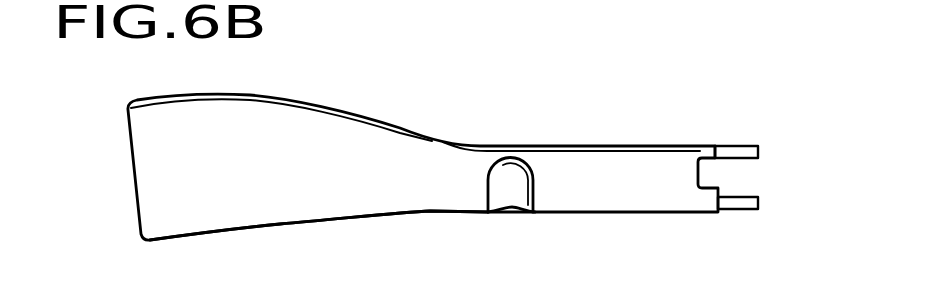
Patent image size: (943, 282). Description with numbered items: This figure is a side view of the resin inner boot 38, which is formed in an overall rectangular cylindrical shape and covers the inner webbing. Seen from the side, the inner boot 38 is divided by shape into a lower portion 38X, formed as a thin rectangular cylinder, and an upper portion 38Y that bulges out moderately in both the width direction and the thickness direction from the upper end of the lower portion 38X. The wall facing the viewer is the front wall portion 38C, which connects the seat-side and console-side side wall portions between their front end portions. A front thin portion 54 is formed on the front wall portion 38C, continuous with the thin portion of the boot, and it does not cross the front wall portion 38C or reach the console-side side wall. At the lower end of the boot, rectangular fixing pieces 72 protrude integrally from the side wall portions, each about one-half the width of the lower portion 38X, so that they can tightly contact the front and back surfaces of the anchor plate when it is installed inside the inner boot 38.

The inner boot 38 is at (472, 110).
The upper portion 38Y is at (262, 97).
The lower portion 38X is at (595, 144).
The front wall portion 38C is at (290, 208).
The front thin portion 54 is at (510, 199).
The fixing piece 72 is at (733, 145).